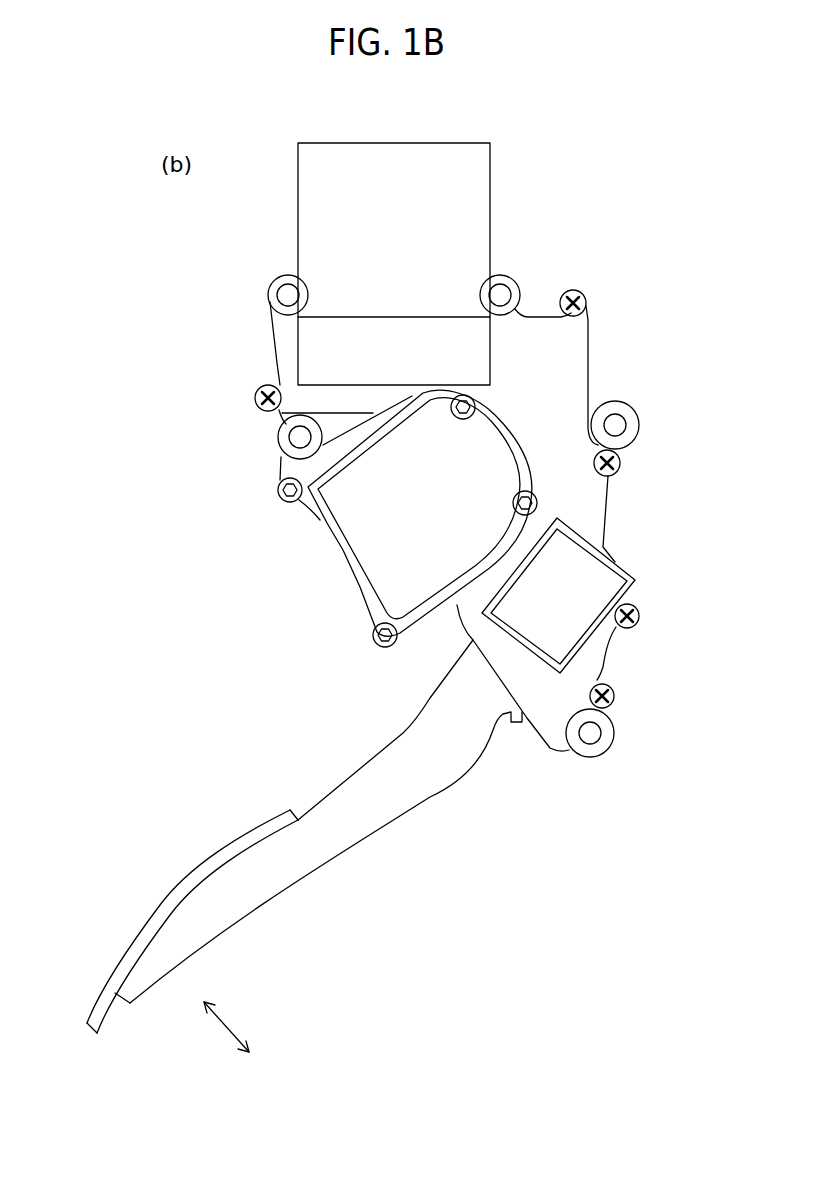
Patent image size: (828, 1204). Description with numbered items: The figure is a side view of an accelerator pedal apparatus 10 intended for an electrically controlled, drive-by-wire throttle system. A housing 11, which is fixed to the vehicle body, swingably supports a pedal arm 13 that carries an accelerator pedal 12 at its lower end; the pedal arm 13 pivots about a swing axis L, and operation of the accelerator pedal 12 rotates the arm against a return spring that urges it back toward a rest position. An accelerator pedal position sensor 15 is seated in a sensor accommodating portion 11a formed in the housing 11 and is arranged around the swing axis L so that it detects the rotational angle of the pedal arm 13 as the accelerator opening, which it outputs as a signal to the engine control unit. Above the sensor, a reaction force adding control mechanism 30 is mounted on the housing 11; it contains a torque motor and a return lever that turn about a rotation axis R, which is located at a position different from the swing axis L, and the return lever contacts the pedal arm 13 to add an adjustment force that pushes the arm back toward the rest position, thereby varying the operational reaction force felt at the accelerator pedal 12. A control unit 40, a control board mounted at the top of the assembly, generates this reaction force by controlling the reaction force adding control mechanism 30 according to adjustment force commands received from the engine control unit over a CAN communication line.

The accelerator pedal apparatus 10 is at (226, 266).
The housing 11 is at (537, 340).
The sensor accommodating portion 11a is at (551, 637).
The accelerator pedal 12 is at (183, 883).
The pedal arm 13 is at (337, 825).
The accelerator pedal position sensor 15 is at (584, 572).
The reaction force adding control mechanism 30 is at (380, 546).
The control unit 40 is at (516, 179).
The rotation axis R is at (472, 468).
The swing axis L is at (549, 597).